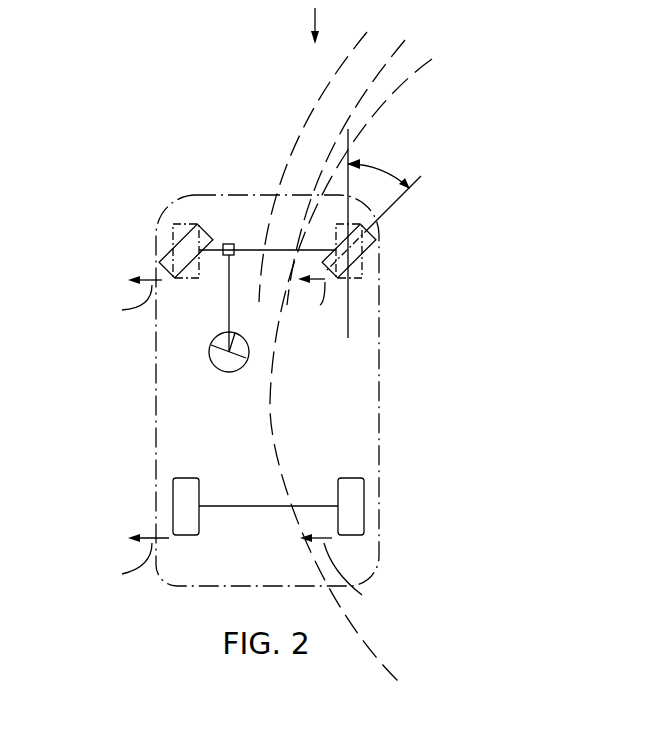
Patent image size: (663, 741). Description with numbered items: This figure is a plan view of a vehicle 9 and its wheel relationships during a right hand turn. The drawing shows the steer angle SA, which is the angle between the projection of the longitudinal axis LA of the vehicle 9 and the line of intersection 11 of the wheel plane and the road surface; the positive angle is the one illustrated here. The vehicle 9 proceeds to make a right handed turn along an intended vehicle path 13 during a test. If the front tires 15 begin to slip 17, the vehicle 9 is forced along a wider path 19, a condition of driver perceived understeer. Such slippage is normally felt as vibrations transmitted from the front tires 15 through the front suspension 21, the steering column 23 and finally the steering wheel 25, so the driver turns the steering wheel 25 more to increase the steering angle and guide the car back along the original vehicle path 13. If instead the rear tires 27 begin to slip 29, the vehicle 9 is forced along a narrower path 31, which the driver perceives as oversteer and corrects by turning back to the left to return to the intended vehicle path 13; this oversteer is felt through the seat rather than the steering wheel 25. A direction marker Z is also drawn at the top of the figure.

The vehicle 9 is at (168, 579).
The line of intersection 11 is at (412, 176).
The vehicle path 13 is at (379, 657).
The front tires 15 is at (152, 252).
The slip 17 is at (212, 305).
The wider path 19 is at (297, 112).
The front suspension 21 is at (236, 242).
The steering column 23 is at (221, 294).
The steering wheel 25 is at (203, 354).
The rear tires 27 is at (173, 497).
The slip 29 is at (240, 573).
The narrower path 31 is at (405, 46).
The longitudinal axis LA is at (343, 122).
The steer angle SA is at (378, 160).
The Z direction Z is at (305, 27).